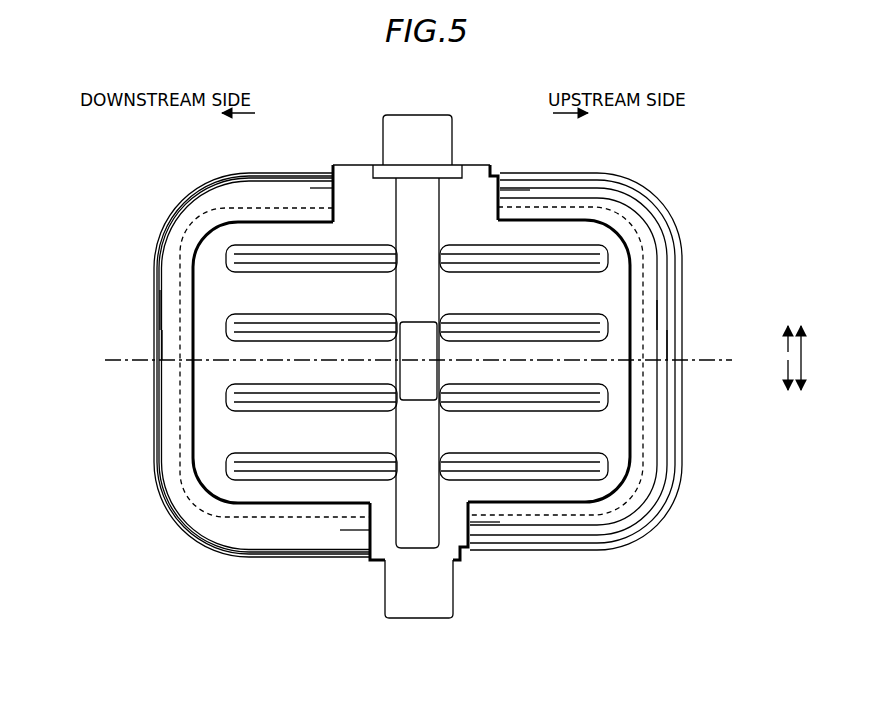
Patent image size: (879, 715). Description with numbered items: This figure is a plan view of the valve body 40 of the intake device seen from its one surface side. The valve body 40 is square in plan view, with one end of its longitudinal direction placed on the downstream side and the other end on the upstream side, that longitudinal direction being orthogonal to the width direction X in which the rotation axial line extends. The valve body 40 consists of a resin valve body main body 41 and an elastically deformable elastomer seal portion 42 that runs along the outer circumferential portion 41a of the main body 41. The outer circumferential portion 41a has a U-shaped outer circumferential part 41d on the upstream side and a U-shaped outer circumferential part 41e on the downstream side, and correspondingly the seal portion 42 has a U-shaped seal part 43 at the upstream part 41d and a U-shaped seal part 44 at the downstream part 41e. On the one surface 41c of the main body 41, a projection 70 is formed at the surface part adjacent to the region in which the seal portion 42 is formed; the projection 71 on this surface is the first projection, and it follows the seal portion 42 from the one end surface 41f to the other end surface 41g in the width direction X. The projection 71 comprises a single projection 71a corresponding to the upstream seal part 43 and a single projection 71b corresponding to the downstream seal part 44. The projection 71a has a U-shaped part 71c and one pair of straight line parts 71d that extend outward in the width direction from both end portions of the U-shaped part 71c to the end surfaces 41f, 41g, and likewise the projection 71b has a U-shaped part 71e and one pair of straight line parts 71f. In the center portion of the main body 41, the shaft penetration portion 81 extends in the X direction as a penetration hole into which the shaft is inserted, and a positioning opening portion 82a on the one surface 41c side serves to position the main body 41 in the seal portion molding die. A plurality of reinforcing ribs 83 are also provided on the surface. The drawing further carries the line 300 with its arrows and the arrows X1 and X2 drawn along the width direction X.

The valve body 40 is at (692, 173).
The valve body main body 41 is at (521, 489).
The outer circumferential portion 41a is at (432, 324).
The one surface 41c is at (245, 490).
The U-shaped outer circumferential part 41d is at (610, 208).
The U-shaped outer circumferential part 41e is at (216, 208).
The one end surface 41f is at (350, 165).
The other end surface 41g is at (377, 562).
The seal portion 42 is at (417, 365).
The seal part 43 is at (677, 216).
The seal part 44 is at (154, 217).
The projection 70 is at (411, 364).
The projection 71 is at (193, 288).
The projection 71a is at (632, 320).
The projection 71b is at (193, 320).
The U-shaped part 71c is at (632, 350).
The straight line parts 71d is at (503, 188).
The U-shaped part 71e is at (193, 352).
The straight line parts 71f is at (332, 192).
The shaft penetration portion 81 is at (418, 624).
The positioning opening portion 82a is at (410, 322).
The reinforcing ribs 83 is at (597, 484).
The cross-section line 300 is at (113, 364).
The width direction X is at (810, 358).
The downward axial direction X1 is at (774, 375).
The upward axial direction X2 is at (774, 340).